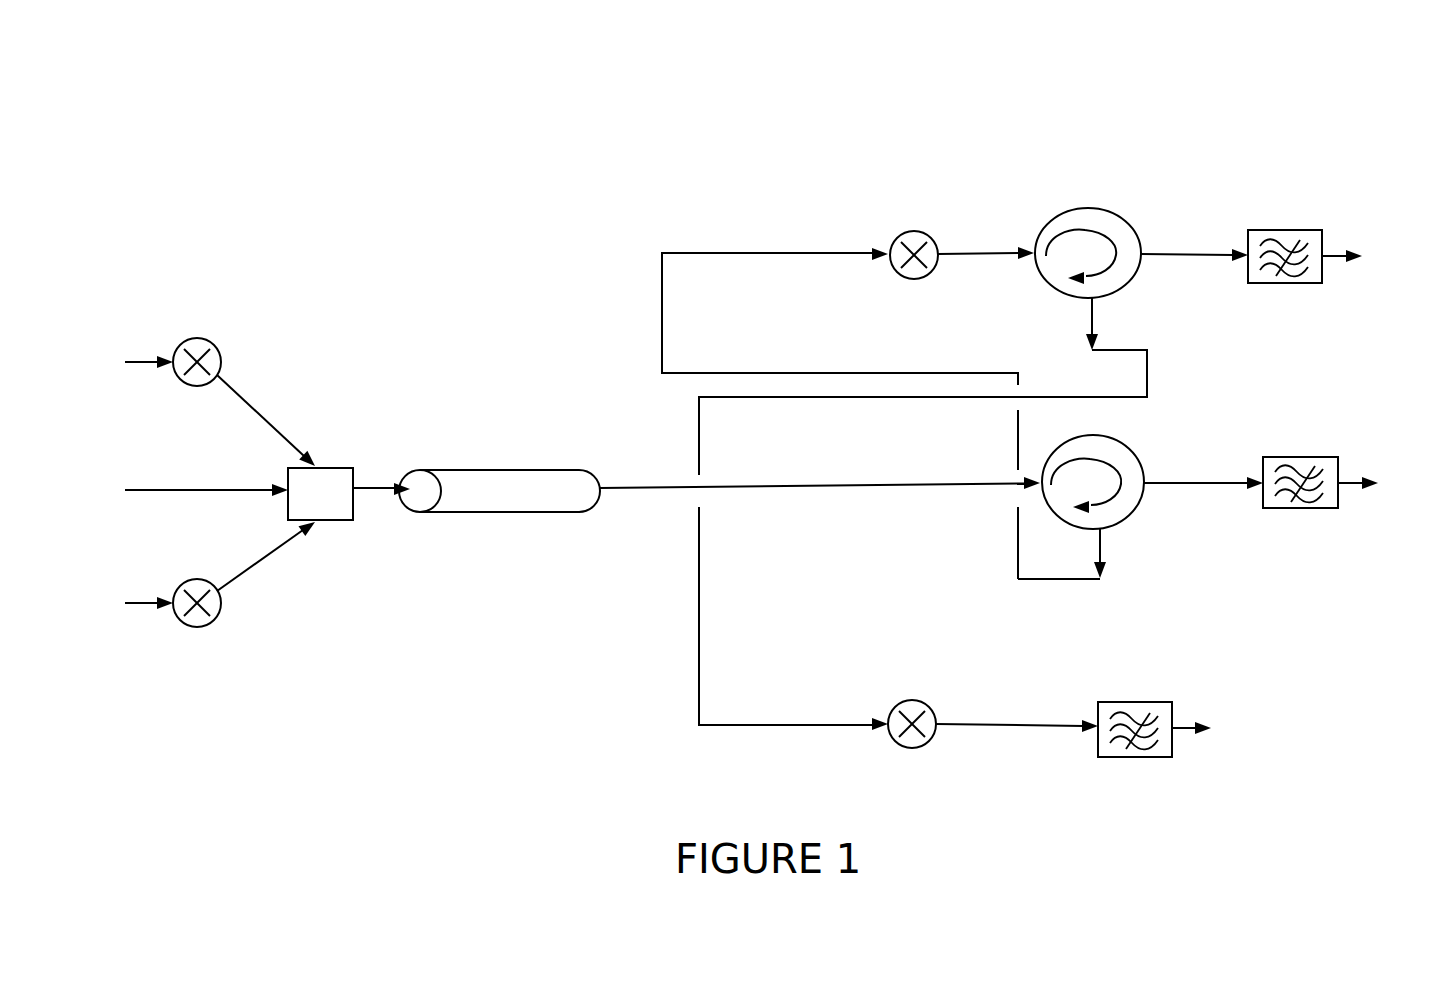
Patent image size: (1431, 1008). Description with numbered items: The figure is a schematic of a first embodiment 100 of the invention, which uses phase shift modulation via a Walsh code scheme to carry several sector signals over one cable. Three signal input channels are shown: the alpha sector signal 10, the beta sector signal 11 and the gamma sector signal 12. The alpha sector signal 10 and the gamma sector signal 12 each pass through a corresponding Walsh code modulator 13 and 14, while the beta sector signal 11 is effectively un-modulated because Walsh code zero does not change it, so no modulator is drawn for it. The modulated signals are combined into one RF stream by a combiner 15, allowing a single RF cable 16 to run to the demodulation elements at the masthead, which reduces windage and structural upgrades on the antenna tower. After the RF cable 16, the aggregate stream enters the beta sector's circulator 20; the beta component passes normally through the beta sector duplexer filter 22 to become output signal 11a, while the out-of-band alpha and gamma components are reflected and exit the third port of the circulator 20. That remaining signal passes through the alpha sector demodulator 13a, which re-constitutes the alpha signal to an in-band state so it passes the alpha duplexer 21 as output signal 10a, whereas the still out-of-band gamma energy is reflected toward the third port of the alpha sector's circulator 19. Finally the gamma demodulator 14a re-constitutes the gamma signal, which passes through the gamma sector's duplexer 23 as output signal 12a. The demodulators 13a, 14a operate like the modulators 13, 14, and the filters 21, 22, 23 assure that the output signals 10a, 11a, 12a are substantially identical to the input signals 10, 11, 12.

The first embodiment 100 is at (485, 152).
The alpha sector signal 10 is at (116, 379).
The beta sector signal 11 is at (116, 507).
The gamma sector signal 12 is at (112, 621).
The Walsh code modulator 13 is at (197, 322).
The Walsh code modulator 14 is at (198, 644).
The combiner 15 is at (335, 508).
The RF cable 16 is at (485, 454).
The alpha sector demodulator 13a is at (915, 218).
The gamma demodulator 14a is at (922, 763).
The alpha sector circulator 19 is at (1095, 265).
The beta sector circulator 20 is at (1100, 494).
The alpha duplexer 21 is at (1287, 214).
The beta sector duplexer filter 22 is at (1291, 527).
The gamma sector duplexer 23 is at (1136, 777).
The alpha sector output signal 10a is at (1416, 274).
The beta sector output signal 11a is at (1430, 501).
The gamma sector output signal 12a is at (1263, 748).